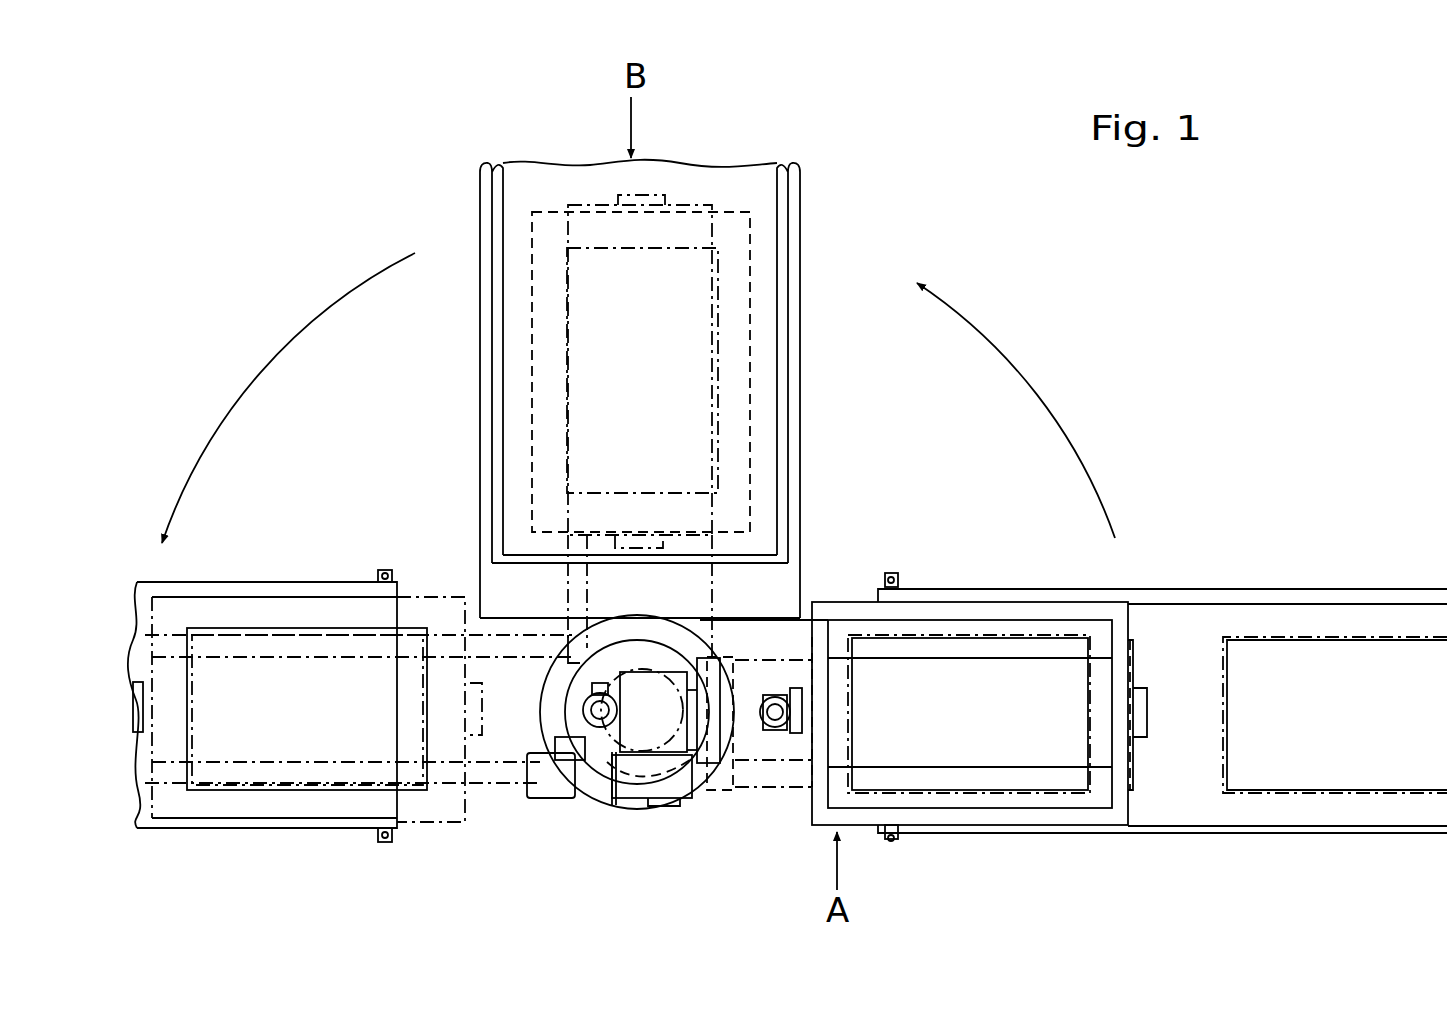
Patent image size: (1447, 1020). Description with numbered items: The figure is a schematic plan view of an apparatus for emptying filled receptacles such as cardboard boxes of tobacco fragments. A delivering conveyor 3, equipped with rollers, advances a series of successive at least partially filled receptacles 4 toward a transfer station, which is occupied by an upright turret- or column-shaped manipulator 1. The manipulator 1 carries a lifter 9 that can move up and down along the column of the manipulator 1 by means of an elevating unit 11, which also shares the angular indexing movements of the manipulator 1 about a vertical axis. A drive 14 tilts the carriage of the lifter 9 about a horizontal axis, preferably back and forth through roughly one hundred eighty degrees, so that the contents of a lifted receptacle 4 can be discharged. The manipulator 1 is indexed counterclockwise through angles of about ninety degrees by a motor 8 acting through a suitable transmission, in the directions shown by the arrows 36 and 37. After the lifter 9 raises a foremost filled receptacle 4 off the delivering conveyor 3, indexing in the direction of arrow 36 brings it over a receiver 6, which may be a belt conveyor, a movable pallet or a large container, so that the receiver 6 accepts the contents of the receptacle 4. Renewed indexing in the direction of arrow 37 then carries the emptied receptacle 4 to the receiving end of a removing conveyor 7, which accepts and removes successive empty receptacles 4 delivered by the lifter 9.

The manipulator 1 is at (637, 812).
The delivering conveyor 3 is at (1175, 586).
The receptacle 4 is at (725, 263).
The receiver 6 is at (803, 318).
The removing conveyor 7 is at (283, 582).
The motor 8 is at (596, 705).
The lifter 9 is at (843, 600).
The elevating unit 11 is at (572, 792).
The drive 14 is at (772, 716).
The arrow 36 is at (1033, 390).
The arrow 37 is at (272, 360).